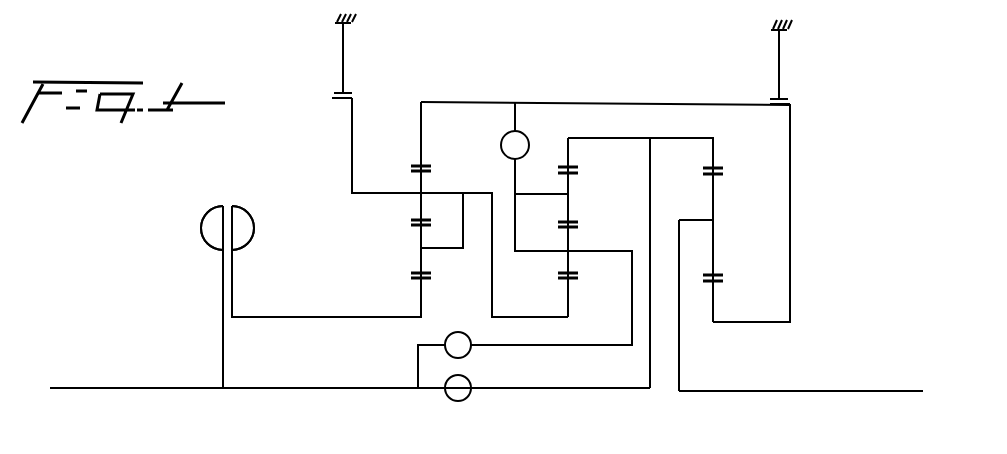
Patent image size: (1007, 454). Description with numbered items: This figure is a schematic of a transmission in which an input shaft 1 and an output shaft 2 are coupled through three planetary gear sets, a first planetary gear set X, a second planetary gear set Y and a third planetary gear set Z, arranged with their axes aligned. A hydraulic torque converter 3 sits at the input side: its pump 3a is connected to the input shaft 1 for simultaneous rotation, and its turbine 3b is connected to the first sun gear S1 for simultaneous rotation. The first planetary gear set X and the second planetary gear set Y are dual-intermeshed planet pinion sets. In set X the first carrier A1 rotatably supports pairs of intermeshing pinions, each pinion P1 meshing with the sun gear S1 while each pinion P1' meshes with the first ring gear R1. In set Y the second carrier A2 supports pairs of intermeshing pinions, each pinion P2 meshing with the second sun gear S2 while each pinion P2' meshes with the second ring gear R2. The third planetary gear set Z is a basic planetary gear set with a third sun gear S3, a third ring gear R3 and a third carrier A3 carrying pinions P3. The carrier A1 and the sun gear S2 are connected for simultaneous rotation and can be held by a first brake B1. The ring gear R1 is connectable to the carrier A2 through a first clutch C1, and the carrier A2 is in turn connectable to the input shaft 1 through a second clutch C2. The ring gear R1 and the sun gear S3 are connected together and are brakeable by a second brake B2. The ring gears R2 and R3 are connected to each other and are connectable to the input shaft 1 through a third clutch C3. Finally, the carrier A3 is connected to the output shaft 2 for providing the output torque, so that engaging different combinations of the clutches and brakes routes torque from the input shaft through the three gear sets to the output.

The input shaft 1 is at (133, 388).
The output shaft 2 is at (849, 393).
The hydraulic torque converter 3 is at (238, 200).
The pump 3a is at (208, 244).
The turbine 3b is at (245, 244).
The first brake B1 is at (352, 90).
The second brake B2 is at (783, 97).
The first clutch C1 is at (500, 139).
The second clutch C2 is at (467, 355).
The third clutch C3 is at (467, 398).
The first planetary gear set X is at (396, 122).
The second planetary gear set Y is at (583, 320).
The third planetary gear set Z is at (699, 312).
The first ring gear R1 is at (421, 146).
The pinion P1' is at (389, 219).
The pinion P1 is at (389, 274).
The first sun gear S1 is at (421, 300).
The first carrier A1 is at (463, 243).
The second ring gear R2 is at (568, 152).
The pinion P2' is at (597, 197).
The second carrier A2 is at (515, 220).
The pinion P2 is at (594, 241).
The second sun gear S2 is at (568, 302).
The third ring gear R3 is at (713, 153).
The third carrier A3 is at (690, 219).
The pinion P3 is at (713, 252).
The third sun gear S3 is at (713, 302).